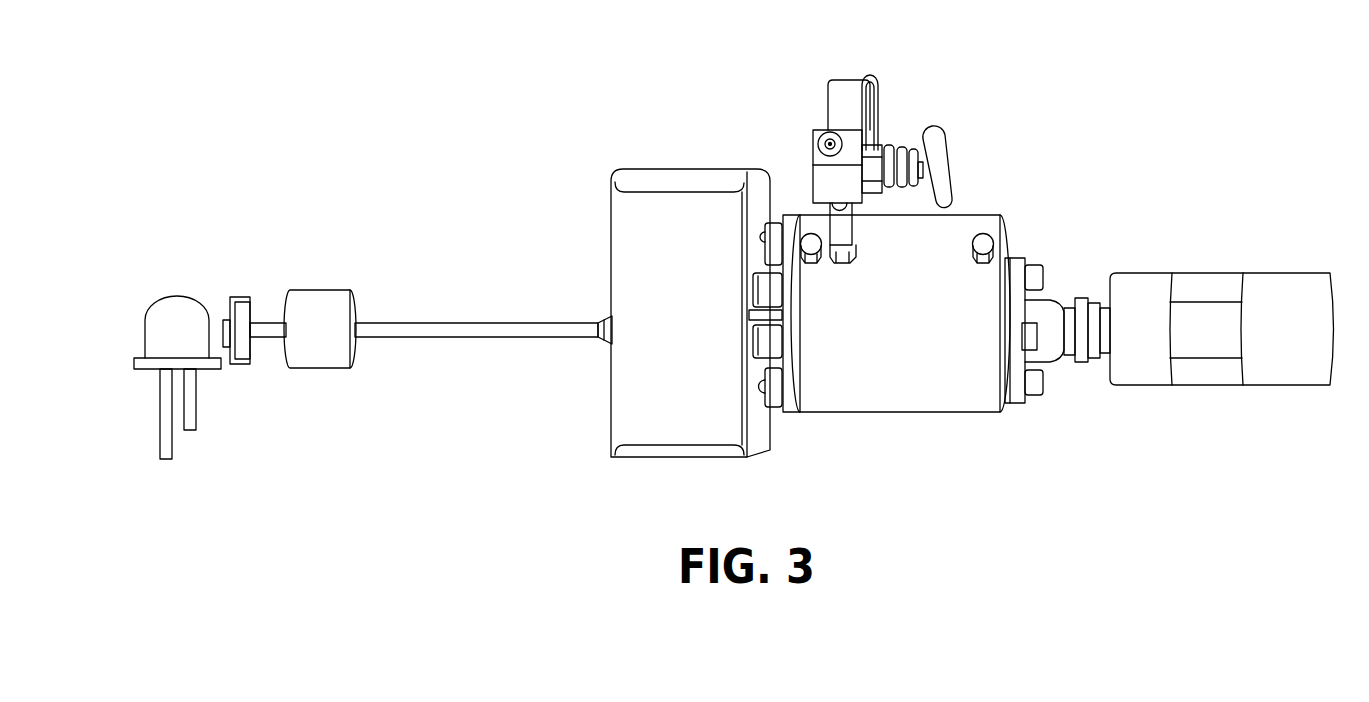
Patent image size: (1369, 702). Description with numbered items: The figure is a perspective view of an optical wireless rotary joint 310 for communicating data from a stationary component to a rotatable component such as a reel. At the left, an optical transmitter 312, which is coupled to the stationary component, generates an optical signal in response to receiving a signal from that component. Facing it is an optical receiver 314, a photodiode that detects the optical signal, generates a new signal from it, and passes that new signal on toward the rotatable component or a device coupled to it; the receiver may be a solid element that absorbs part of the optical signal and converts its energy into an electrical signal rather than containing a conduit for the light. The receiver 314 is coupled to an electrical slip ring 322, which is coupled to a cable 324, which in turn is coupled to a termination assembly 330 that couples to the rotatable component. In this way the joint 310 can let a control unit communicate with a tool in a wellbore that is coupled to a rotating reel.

The optical wireless rotary joint 310 is at (242, 101).
The optical transmitter 312 is at (168, 295).
The optical receiver 314 is at (242, 295).
The collimator 322 is at (338, 290).
The optical fiber rod 324 is at (490, 338).
The photodetector assembly 330 is at (887, 412).